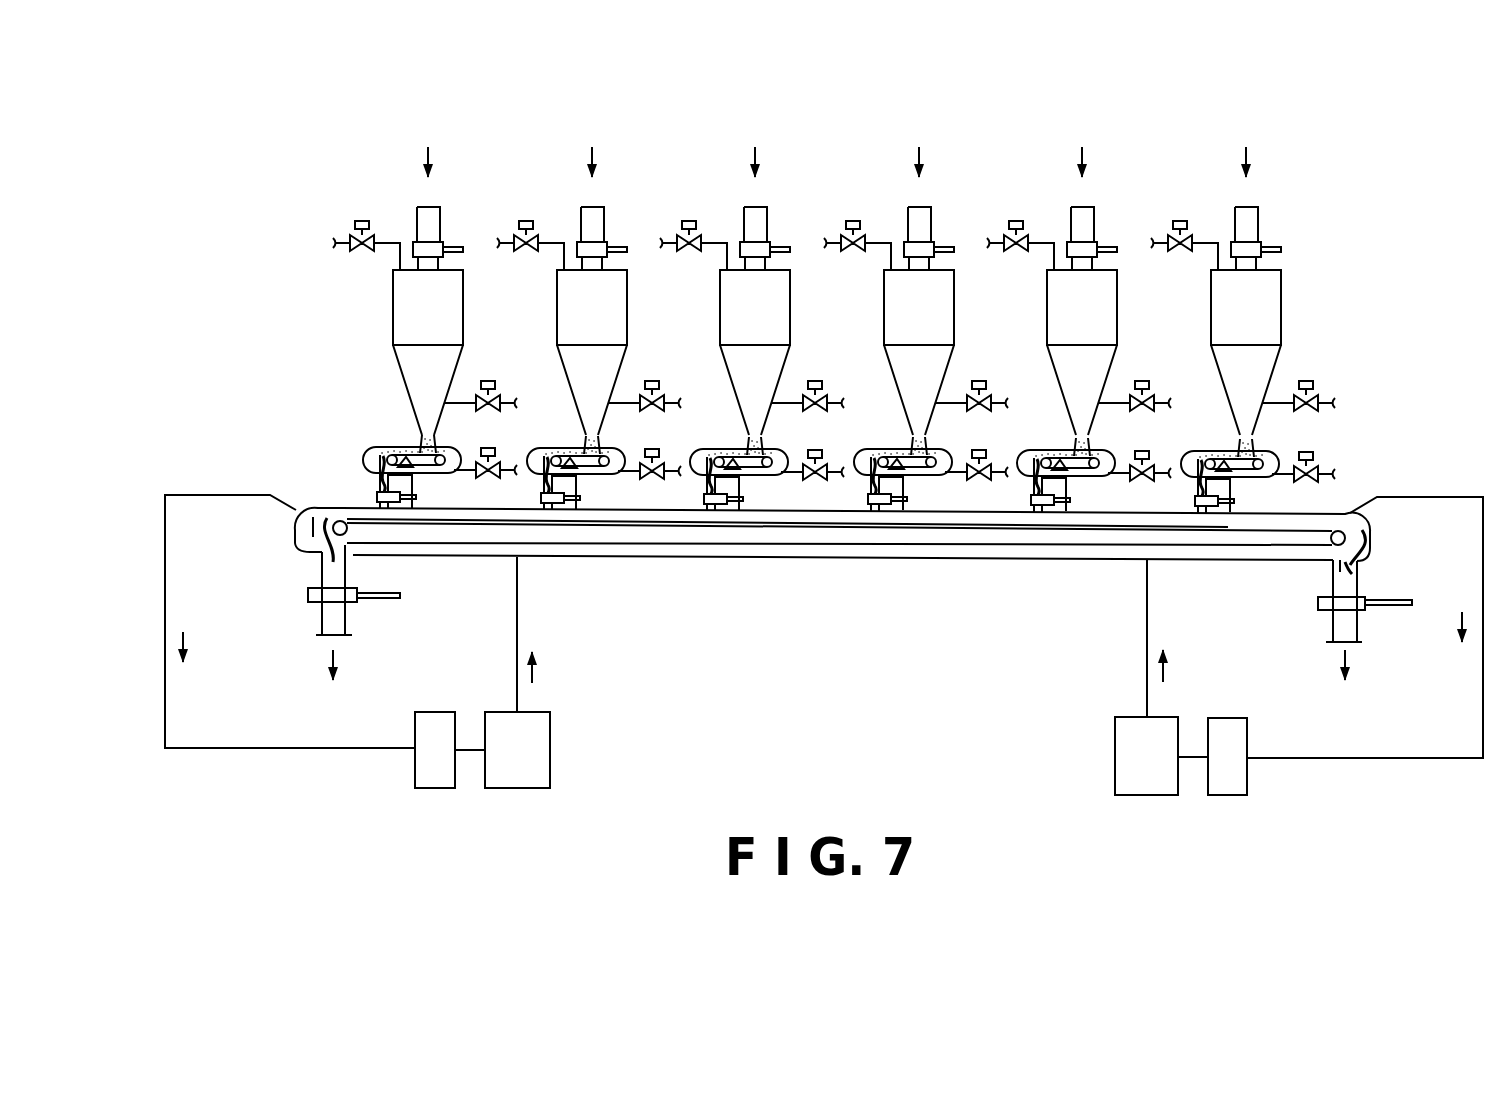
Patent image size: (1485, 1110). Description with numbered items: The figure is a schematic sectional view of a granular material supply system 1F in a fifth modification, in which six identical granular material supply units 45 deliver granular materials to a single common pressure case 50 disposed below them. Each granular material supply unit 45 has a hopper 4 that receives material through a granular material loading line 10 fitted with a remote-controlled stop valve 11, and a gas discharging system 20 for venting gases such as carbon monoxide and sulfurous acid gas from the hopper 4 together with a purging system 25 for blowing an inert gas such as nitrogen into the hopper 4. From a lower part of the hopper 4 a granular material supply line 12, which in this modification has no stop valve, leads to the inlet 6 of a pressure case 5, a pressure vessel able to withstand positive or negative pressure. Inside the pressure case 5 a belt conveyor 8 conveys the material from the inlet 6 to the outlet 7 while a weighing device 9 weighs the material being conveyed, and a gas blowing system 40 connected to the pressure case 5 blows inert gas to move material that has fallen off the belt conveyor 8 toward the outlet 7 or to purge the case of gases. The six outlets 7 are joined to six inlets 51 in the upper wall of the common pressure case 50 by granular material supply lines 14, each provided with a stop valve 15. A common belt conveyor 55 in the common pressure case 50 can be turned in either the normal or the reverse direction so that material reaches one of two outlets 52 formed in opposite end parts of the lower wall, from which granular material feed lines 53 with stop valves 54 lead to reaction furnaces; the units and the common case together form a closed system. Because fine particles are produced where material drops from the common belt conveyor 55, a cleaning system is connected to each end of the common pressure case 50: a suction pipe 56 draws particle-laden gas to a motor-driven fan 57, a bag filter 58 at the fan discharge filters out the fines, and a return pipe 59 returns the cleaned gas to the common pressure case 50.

The granular material supply system 1F is at (331, 158).
The hopper 4 is at (465, 305).
The pressure case 5 is at (787, 499).
The inlet 6 is at (417, 447).
The outlet 7 is at (380, 483).
The belt conveyor 8 is at (442, 464).
The weighing device 9 is at (427, 468).
The granular material loading line 10 is at (440, 228).
The stop valve 11 is at (407, 243).
The granular material supply line 12 is at (423, 432).
The granular material supply line 14 is at (377, 490).
The stop valve 15 is at (387, 503).
The gas discharging system 20 is at (338, 216).
The purging system 25 is at (505, 378).
The gas blowing system 40 is at (512, 446).
The granular material supply unit 45 is at (383, 322).
The common pressure case 50 is at (824, 682).
The inlet 51 is at (550, 509).
The outlet 52 is at (317, 573).
The granular material feed line 53 is at (317, 615).
The stop valve 54 is at (307, 593).
The common belt conveyor 55 is at (797, 545).
The suction pipe 56 is at (275, 748).
The motor-driven fan 57 is at (440, 790).
The bag filter 58 is at (520, 790).
The return pipe 59 is at (518, 600).